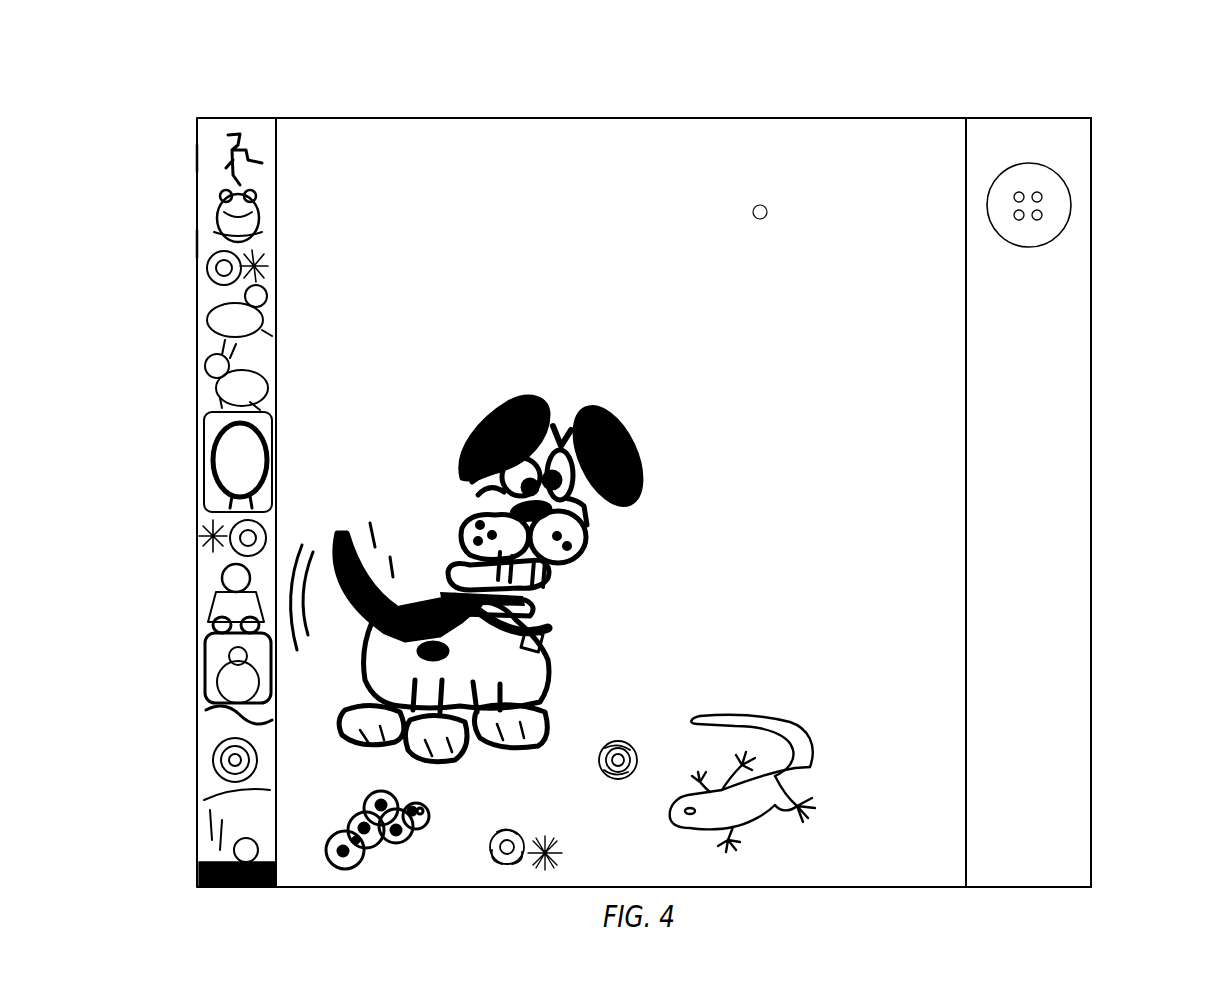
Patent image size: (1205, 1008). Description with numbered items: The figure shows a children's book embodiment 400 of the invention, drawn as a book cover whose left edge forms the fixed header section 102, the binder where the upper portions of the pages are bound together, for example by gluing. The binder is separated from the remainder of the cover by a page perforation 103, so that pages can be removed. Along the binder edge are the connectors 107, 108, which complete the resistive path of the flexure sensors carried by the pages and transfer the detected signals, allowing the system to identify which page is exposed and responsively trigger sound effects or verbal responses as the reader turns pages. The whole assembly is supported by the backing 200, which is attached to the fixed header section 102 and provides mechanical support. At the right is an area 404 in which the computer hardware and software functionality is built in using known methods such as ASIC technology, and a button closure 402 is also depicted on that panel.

The fixed header section 102 is at (207, 117).
The page perforation 103 is at (276, 117).
The connector 107 is at (197, 157).
The connector 108 is at (197, 243).
The backing 200 is at (1091, 740).
The children's book embodiment 400 is at (669, 80).
The button closure 402 is at (1071, 200).
The area 404 is at (1052, 570).